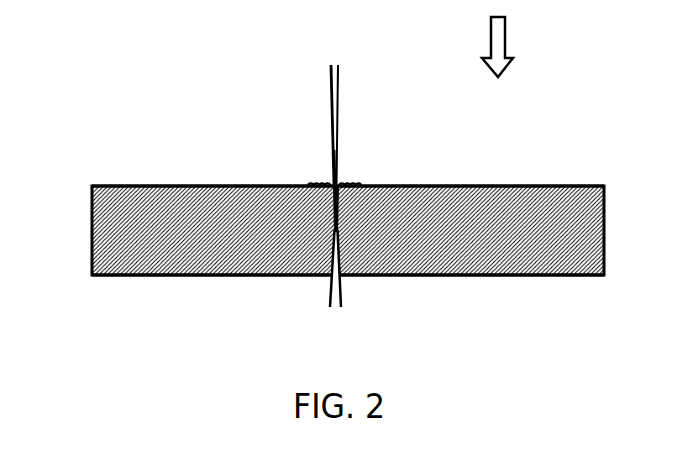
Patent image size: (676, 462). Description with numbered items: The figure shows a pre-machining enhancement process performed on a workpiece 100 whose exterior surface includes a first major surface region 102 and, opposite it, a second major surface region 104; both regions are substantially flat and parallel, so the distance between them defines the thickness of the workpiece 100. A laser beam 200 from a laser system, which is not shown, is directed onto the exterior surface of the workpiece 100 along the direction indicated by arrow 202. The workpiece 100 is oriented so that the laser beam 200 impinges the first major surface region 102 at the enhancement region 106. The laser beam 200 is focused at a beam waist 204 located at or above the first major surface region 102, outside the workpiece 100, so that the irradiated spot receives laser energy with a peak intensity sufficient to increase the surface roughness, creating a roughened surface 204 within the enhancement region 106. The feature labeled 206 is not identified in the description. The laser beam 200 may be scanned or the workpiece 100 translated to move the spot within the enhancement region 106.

The workpiece 100 is at (112, 111).
The first major surface region 102 is at (180, 185).
The second major surface region 104 is at (170, 278).
The enhancement region 106 is at (298, 124).
The laser beam 200 is at (341, 82).
The arrow 202 is at (505, 55).
The beam waist 204 is at (327, 181).
The fiber tip / entry point 206 is at (346, 166).